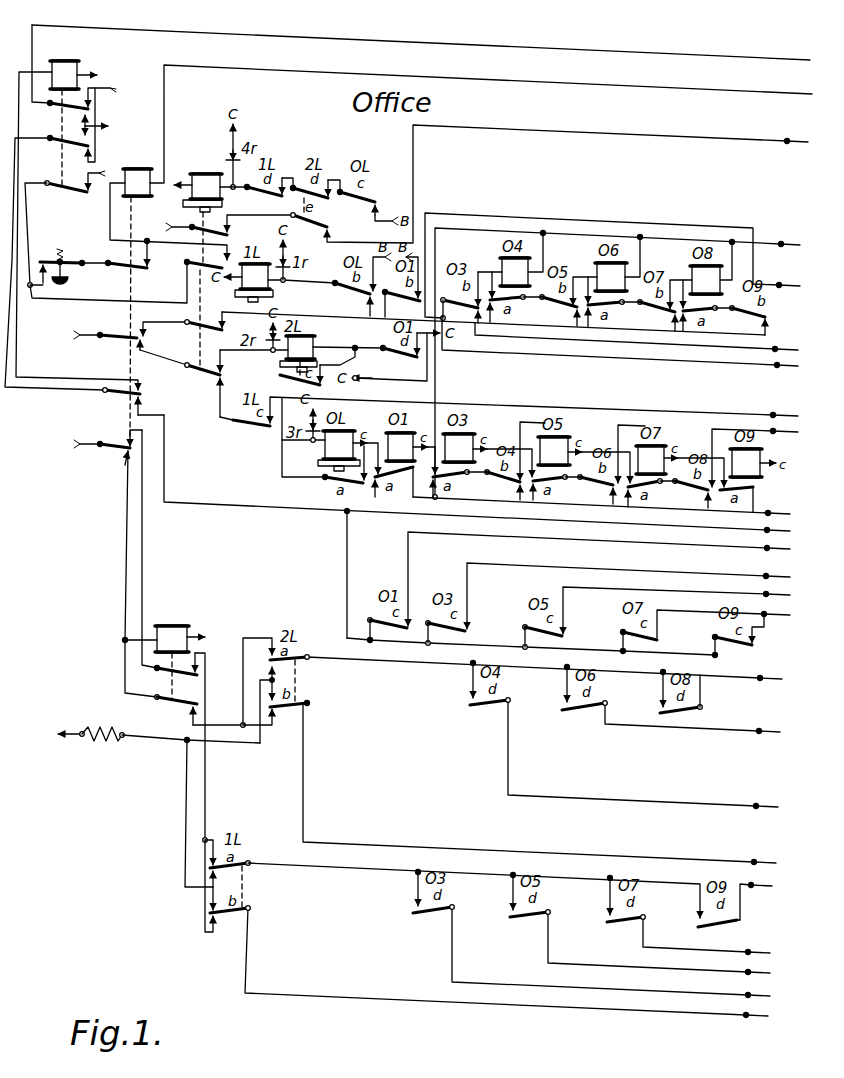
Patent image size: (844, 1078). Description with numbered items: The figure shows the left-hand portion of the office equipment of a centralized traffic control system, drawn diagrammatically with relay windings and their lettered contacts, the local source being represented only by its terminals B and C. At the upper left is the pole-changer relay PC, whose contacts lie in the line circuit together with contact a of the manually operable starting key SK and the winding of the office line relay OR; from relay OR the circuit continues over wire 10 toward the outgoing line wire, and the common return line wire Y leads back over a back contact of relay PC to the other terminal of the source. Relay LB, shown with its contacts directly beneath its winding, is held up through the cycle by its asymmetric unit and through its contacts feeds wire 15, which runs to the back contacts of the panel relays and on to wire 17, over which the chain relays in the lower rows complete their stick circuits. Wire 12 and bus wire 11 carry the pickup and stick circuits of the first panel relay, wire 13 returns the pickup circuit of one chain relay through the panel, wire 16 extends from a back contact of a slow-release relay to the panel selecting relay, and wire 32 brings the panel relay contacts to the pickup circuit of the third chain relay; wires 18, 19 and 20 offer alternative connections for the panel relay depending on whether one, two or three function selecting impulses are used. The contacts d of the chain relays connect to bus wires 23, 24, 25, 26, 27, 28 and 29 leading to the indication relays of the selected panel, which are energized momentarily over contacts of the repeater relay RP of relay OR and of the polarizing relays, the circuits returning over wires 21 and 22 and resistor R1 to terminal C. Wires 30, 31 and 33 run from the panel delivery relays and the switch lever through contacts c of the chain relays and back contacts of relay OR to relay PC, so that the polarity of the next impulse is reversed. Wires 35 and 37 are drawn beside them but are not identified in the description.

The common return line wire Y is at (421, 42).
The wire 10 is at (481, 124).
The bus wire 11 is at (640, 337).
The wire 12 is at (616, 266).
The wire 13 is at (621, 361).
The wire 15 is at (535, 408).
The wire 16 is at (569, 181).
The wire 17 is at (604, 504).
The wire 18 is at (532, 441).
The wire 19 is at (631, 443).
The wire 20 is at (756, 458).
The wire 21 is at (508, 963).
The wire 22 is at (541, 784).
The bus wire 23 is at (612, 952).
The bus wire 24 is at (645, 754).
The bus wire 25 is at (660, 943).
The bus wire 26 is at (695, 718).
The bus wire 27 is at (707, 936).
The bus wire 28 is at (547, 668).
The bus wire 29 is at (758, 892).
The wire 30 is at (479, 474).
The wire 31 is at (601, 577).
The wire 32 is at (620, 353).
The wire 33 is at (629, 593).
The line wire 35 is at (677, 605).
The line wire 37 is at (723, 618).
The pole-changer relay PC is at (71, 207).
The line relay OR is at (143, 305).
The relay LB is at (222, 285).
The starting key SK is at (108, 267).
The repeater relay RP is at (184, 635).
The resistor R1 is at (149, 728).